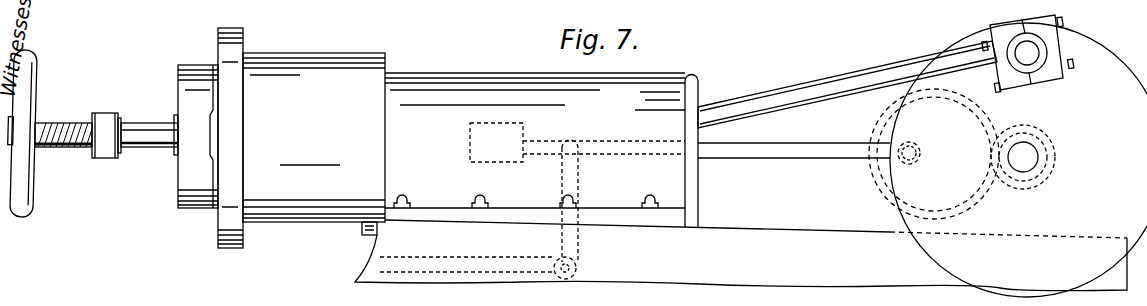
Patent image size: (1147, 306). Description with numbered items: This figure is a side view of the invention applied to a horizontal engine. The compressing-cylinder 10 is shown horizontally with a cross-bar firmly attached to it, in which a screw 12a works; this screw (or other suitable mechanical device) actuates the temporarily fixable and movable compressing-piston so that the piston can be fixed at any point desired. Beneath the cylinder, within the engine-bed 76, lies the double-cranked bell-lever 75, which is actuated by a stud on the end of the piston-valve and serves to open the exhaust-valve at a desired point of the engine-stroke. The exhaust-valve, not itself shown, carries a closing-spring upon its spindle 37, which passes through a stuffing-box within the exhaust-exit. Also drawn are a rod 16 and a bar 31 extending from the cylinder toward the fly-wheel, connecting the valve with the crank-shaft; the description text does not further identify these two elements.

The compressing-cylinder 10 is at (314, 137).
The screw 12a is at (91, 132).
The piston rod 16 is at (809, 153).
The connecting bar 31 is at (836, 95).
The spindle 37 is at (368, 236).
The double-cranked bell-lever 75 is at (467, 265).
The engine-bed 76 is at (741, 255).